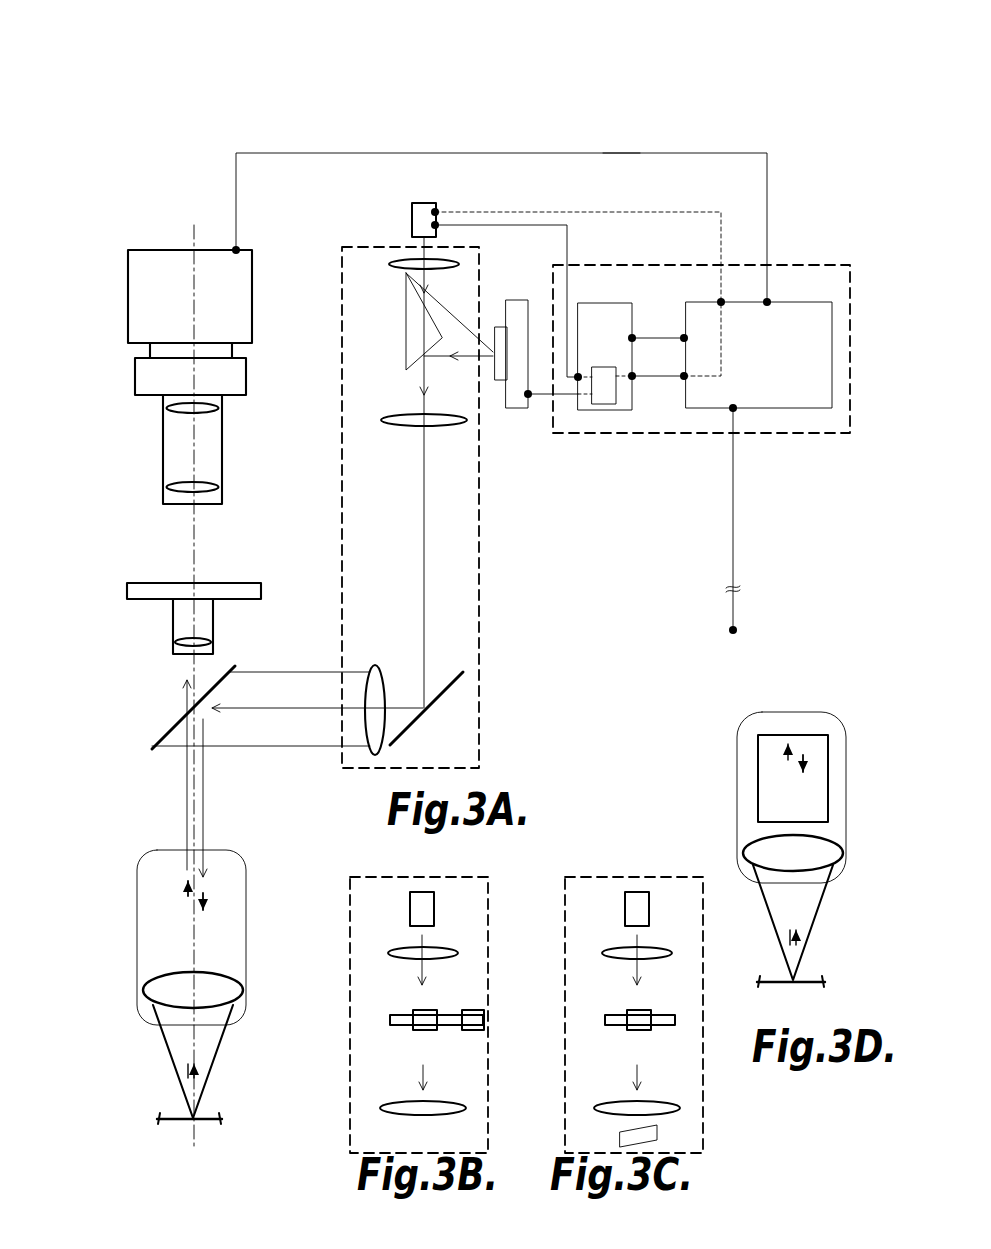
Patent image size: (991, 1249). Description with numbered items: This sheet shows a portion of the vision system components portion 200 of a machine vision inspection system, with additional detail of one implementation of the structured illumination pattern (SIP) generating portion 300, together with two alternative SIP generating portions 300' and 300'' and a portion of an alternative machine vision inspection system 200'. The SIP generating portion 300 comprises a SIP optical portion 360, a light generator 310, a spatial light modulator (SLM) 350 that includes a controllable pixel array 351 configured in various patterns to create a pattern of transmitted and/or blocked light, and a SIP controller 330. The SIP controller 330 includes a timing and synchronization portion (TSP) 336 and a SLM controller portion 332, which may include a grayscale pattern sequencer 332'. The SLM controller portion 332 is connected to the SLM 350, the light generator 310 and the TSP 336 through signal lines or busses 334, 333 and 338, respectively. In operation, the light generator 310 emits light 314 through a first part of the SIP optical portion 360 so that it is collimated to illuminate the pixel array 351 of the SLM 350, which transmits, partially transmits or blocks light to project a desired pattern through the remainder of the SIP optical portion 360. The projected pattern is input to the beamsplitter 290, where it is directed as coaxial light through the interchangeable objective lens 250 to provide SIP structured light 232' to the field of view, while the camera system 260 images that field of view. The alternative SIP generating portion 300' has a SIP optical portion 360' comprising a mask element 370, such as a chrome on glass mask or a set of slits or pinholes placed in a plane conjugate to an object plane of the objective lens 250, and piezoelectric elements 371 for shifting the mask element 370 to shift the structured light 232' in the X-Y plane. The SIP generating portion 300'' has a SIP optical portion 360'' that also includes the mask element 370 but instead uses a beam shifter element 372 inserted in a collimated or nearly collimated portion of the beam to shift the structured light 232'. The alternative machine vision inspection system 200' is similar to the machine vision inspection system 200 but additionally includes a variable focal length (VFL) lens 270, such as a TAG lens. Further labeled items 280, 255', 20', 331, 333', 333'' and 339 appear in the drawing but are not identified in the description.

In FIG. 3A, the vision system components portion 200 is at (138, 250).
In FIG. 3D, the machine vision inspection system 200' is at (816, 823).
In FIG. 3A, the camera system 260 is at (150, 448).
In FIG. 3A, the filter assembly 280 is at (153, 566).
In FIG. 3A, the beamsplitter 290 is at (237, 666).
In FIG. 3A, the interchangeable objective lens 250 is at (140, 985).
In FIG. 3A, the light beam 255' is at (262, 962).
In FIG. 3D, the light beam 255' is at (862, 824).
In FIG. 3A, the SIP structured light 232' is at (269, 883).
In FIG. 3D, the SIP structured light 232' is at (870, 747).
In FIG. 3A, the sample 20' is at (210, 1136).
In FIG. 3D, the sample 20' is at (810, 1001).
In FIG. 3D, the variable focal length lens 270 is at (830, 794).
In FIG. 3A, the structured illumination pattern generating portion 300 is at (596, 392).
In FIG. 3B, the structured illumination pattern generating portion 300' is at (434, 1001).
In FIG. 3C, the structured illumination pattern generating portion 300'' is at (641, 1001).
In FIG. 3A, the SIP optical portion 360 is at (455, 399).
In FIG. 3B, the SIP optical portion 360' is at (419, 1014).
In FIG. 3C, the SIP optical portion 360'' is at (634, 1014).
In FIG. 3A, the light generator 310 is at (428, 203).
In FIG. 3A, the light 314 is at (432, 308).
In FIG. 3A, the spatial light modulator 350 is at (517, 290).
In FIG. 3A, the controllable pixel array 351 is at (499, 381).
In FIG. 3A, the SIP controller 330 is at (605, 265).
In FIG. 3A, the output line 331 is at (733, 553).
In FIG. 3A, the SLM controller portion 332 is at (604, 342).
In FIG. 3A, the grayscale pattern sequencer 332' is at (622, 424).
In FIG. 3A, the signal line or bus 333 is at (506, 277).
In FIG. 3A, the connection line 333' is at (658, 401).
In FIG. 3A, the connection line 333'' is at (588, 276).
In FIG. 3A, the signal line or bus 334 is at (542, 394).
In FIG. 3A, the timing and synchronization portion 336 is at (762, 410).
In FIG. 3A, the signal line or bus 338 is at (650, 338).
In FIG. 3A, the camera connection line 339 is at (603, 153).
In FIG. 3B, the mask element 370 is at (406, 1015).
In FIG. 3C, the mask element 370 is at (618, 1015).
In FIG. 3B, the piezoelectric elements 371 is at (470, 1010).
In FIG. 3C, the beam shifter element 372 is at (618, 1136).